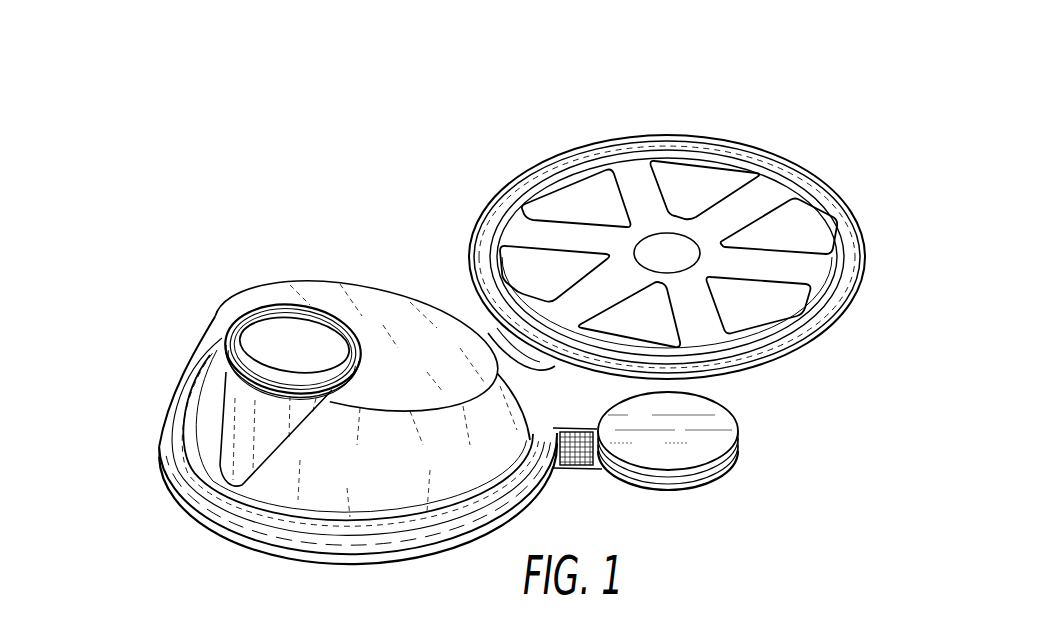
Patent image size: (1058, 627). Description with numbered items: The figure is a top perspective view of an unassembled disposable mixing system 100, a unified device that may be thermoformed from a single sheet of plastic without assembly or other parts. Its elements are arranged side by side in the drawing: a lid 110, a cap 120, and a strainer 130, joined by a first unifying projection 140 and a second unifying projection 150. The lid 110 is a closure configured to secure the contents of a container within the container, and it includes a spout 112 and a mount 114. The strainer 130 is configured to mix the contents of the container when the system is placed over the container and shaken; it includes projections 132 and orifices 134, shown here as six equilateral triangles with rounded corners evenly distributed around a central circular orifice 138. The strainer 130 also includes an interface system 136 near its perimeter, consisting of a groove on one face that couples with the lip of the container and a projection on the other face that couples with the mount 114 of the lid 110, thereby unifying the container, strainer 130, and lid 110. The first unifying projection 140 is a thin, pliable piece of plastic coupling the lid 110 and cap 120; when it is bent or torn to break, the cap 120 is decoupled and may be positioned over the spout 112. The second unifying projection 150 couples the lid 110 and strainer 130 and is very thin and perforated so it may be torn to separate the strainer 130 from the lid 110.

The disposable mixing system 100 is at (178, 267).
The lid 110 is at (388, 322).
The spout 112 is at (280, 330).
The mount 114 is at (168, 437).
The cap 120 is at (688, 438).
The strainer 130 is at (702, 216).
The projections 132 is at (775, 273).
The orifices 134 is at (710, 185).
The interface system 136 is at (788, 175).
The central circular orifice 138 is at (662, 256).
The first unifying projection 140 is at (577, 465).
The second unifying projection 150 is at (470, 328).